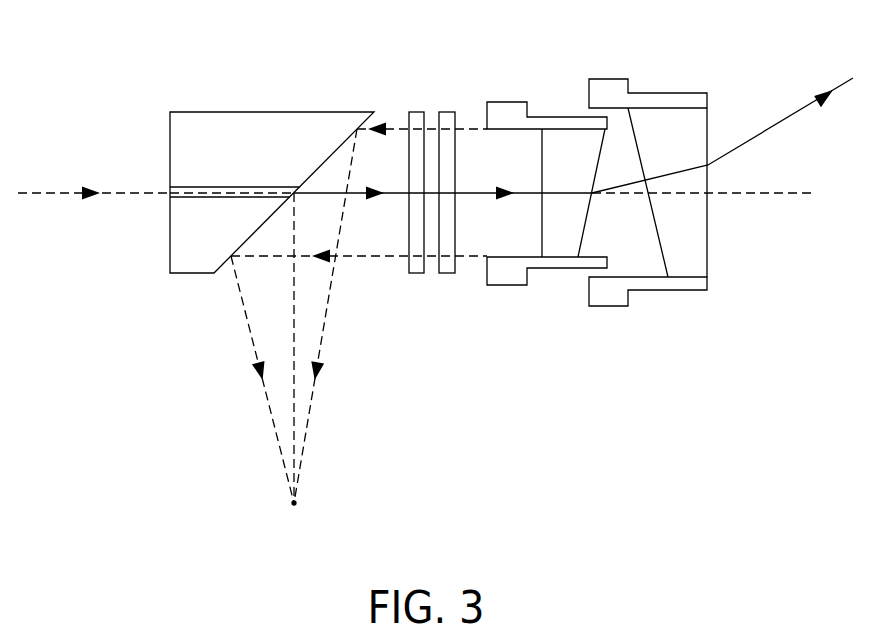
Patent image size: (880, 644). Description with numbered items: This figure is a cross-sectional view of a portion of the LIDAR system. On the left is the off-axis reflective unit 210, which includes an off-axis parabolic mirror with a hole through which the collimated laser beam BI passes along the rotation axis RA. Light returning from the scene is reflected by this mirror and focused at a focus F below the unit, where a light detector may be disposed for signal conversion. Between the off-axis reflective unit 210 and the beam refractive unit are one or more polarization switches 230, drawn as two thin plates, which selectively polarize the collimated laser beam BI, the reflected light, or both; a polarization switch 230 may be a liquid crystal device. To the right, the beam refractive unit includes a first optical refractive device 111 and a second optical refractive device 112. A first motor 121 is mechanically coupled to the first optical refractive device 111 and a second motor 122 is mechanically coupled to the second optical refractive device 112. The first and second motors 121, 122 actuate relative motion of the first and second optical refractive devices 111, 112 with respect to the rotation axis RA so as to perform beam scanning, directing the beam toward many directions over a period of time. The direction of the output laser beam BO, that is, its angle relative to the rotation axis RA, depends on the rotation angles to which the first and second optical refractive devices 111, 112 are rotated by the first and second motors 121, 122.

The off-axis reflective unit 210 is at (256, 112).
The polarization switch 230 is at (419, 112).
The first motor 121 is at (507, 102).
The second motor 122 is at (608, 79).
The first optical refractive device 111 is at (562, 243).
The second optical refractive device 112 is at (703, 267).
The collimated laser beam BI is at (68, 193).
The output laser beam BO is at (782, 120).
The rotation axis RA is at (732, 193).
The focus F is at (294, 327).